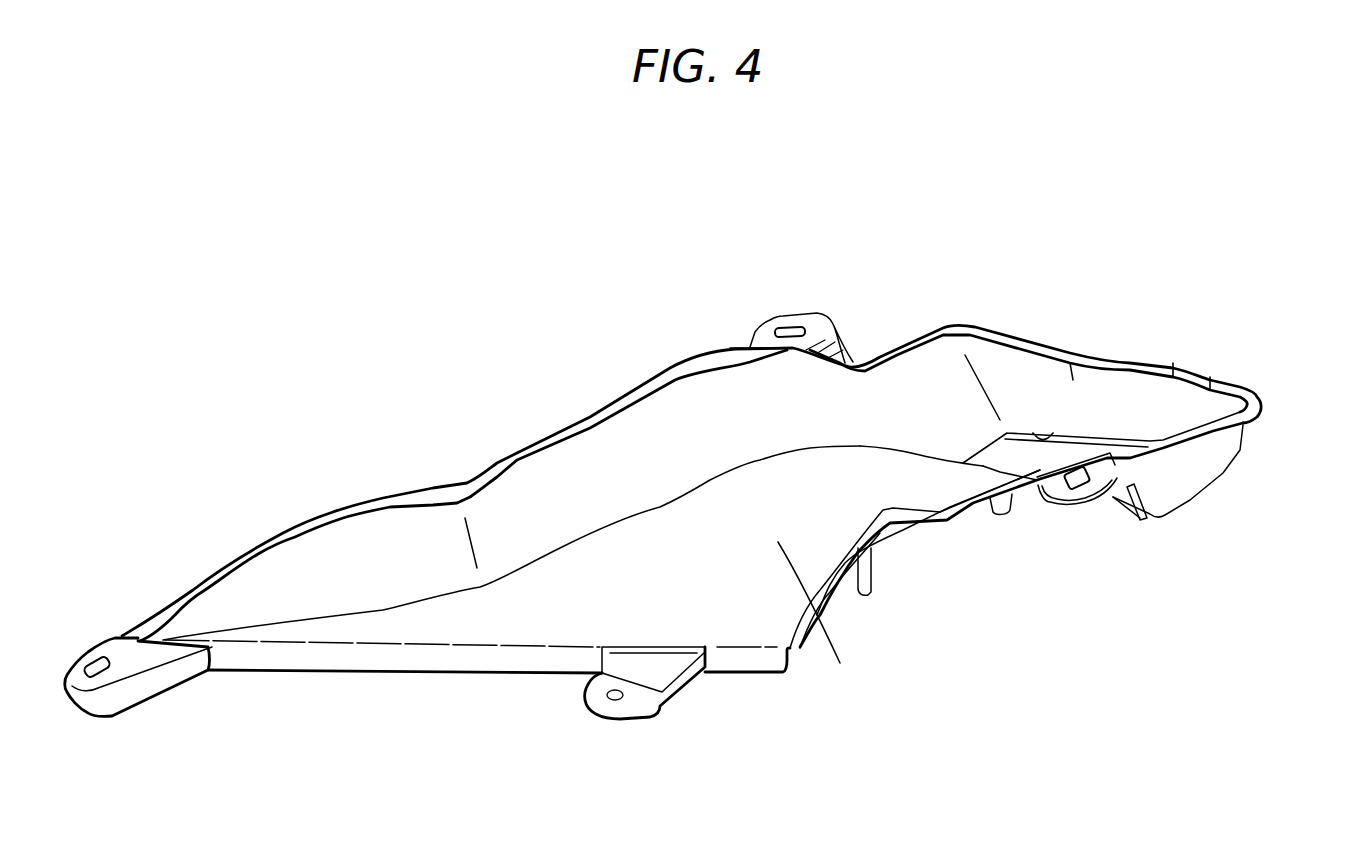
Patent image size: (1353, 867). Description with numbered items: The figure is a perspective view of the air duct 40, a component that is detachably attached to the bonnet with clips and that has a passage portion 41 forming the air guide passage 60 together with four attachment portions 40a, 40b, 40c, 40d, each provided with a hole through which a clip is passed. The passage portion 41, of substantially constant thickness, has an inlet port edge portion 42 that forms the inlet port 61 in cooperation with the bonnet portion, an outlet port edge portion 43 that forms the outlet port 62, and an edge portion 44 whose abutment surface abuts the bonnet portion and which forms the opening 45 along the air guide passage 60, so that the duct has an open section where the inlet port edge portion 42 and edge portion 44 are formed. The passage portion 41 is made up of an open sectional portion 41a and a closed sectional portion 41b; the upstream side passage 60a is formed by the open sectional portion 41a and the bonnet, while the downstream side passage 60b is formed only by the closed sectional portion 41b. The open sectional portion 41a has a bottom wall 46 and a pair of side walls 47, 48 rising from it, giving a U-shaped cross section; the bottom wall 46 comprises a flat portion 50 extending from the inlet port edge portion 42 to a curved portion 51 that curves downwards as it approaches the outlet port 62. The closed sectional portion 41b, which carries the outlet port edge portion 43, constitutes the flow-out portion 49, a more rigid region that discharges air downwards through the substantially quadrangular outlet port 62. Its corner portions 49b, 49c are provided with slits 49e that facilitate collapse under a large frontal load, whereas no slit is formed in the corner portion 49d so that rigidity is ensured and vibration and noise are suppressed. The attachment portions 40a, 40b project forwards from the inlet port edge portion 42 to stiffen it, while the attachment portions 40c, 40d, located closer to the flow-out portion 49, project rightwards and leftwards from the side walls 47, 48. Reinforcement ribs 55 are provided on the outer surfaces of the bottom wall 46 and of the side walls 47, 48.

The air duct 40 is at (697, 468).
The passage portion 41 is at (726, 430).
The open sectional portion 41a is at (493, 462).
The closed sectional portion 41b is at (1101, 437).
The attachment portion 40a is at (152, 682).
The attachment portion 40b is at (665, 703).
The attachment portion 40c is at (830, 330).
The attachment portion 40d is at (1055, 487).
The inlet port edge portion 42 is at (485, 658).
The outlet port edge portion 43 is at (1057, 437).
The edge portion 44 is at (1223, 382).
The opening 45 is at (603, 445).
The bottom wall 46 is at (1010, 473).
The side wall 47 is at (557, 510).
The side wall 48 is at (893, 540).
The flow-out portion 49 is at (1077, 416).
The corner portion 49b is at (1147, 492).
The corner portion 49c is at (1237, 438).
The corner portion 49d is at (992, 375).
The slit 49e is at (1123, 520).
The flat portion 50 is at (743, 620).
The curved portion 51 is at (948, 431).
The reinforcement rib 55 is at (860, 597).
The air guide passage 60 is at (809, 602).
The upstream side passage 60a is at (827, 628).
The downstream side passage 60b is at (1073, 380).
The inlet port 61 is at (557, 652).
The outlet port 62 is at (1000, 450).